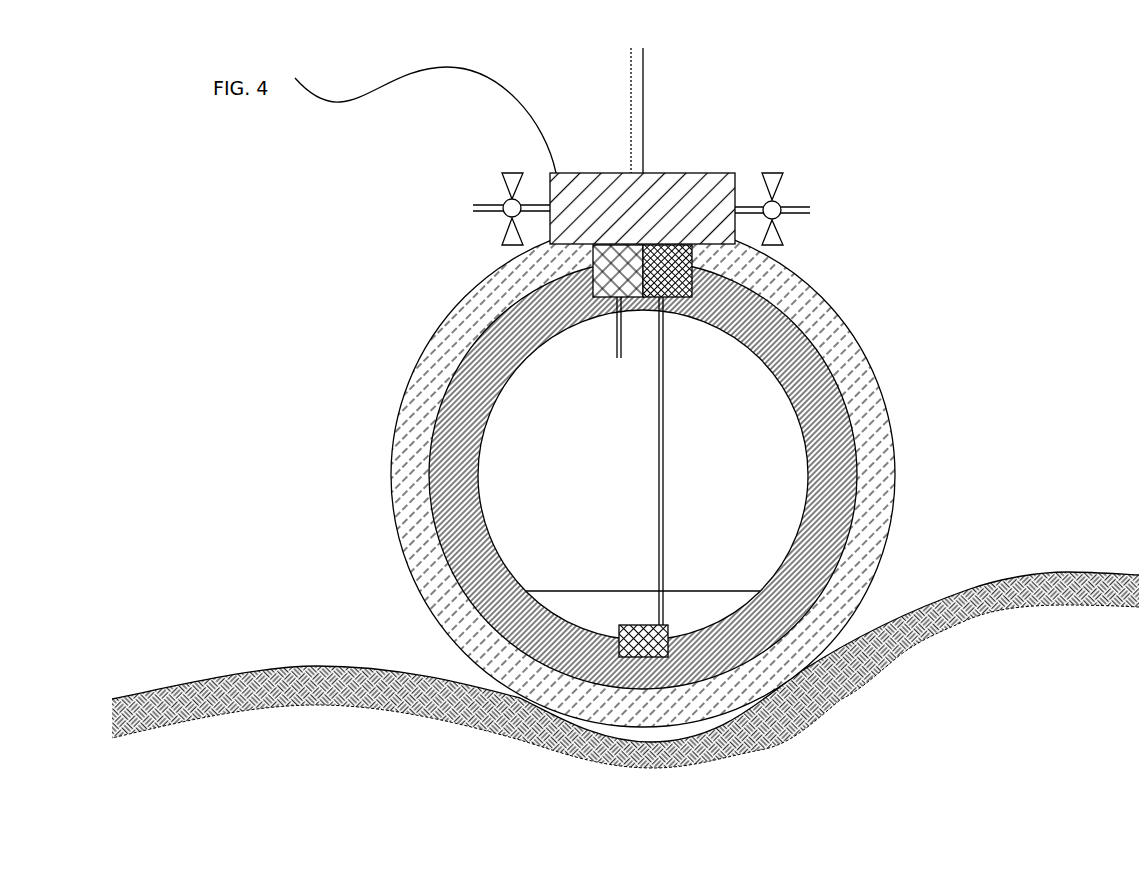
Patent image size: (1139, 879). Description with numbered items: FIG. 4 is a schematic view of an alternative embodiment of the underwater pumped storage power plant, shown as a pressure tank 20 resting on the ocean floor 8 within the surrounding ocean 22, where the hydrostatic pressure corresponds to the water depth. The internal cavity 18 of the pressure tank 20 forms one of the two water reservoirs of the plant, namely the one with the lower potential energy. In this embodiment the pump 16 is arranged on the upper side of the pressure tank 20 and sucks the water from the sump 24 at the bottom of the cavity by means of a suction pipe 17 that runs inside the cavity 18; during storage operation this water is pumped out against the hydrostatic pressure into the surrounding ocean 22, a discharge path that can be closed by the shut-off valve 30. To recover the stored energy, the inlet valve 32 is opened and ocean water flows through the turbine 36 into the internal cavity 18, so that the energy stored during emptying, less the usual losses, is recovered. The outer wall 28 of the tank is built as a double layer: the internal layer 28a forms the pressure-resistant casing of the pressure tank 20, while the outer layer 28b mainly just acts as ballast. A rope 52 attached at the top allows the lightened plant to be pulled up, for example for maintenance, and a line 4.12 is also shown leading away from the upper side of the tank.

The flexible supply line 4.12 is at (370, 97).
The rope 52 is at (637, 107).
The inlet valve 32 is at (500, 177).
The shut-off valve 30 is at (786, 179).
The turbine 36 is at (600, 272).
The pressure tank 20 is at (856, 332).
The outer wall 28 is at (843, 378).
The internal layer 28a is at (848, 484).
The outer layer 28b is at (880, 540).
The pump 16 is at (693, 317).
The suction pipe 17 is at (666, 502).
The internal cavity 18 is at (643, 540).
The surrounding ocean 22 is at (671, 423).
The ocean floor 8 is at (309, 664).
The sump 24 is at (655, 652).